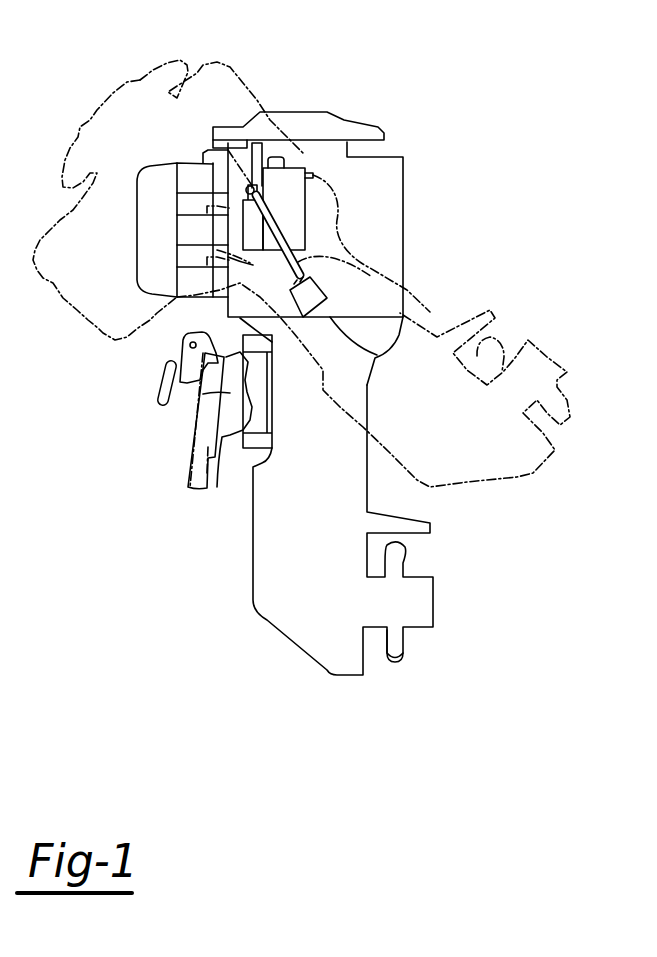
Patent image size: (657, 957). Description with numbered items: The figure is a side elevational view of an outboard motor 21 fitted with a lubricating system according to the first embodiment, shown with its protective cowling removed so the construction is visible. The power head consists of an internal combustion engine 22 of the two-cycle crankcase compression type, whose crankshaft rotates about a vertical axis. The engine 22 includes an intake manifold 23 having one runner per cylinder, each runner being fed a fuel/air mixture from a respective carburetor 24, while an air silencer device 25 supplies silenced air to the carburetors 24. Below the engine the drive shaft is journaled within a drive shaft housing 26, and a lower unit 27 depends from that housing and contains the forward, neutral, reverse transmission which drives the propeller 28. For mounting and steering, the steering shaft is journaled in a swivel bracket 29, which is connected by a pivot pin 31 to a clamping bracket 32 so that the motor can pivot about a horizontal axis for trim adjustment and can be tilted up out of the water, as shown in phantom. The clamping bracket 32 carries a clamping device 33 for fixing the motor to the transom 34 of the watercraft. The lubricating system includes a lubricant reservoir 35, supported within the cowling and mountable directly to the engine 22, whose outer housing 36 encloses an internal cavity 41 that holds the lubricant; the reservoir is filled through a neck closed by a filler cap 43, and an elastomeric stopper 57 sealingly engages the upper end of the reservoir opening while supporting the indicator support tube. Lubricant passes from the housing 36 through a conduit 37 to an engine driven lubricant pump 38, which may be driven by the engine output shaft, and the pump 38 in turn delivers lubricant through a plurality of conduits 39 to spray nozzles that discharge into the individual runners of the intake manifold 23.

The outboard motor 21 is at (426, 133).
The internal combustion engine 22 is at (395, 220).
The intake manifold 23 is at (222, 168).
The carburetor 24 is at (188, 170).
The air silencer device 25 is at (148, 178).
The drive shaft housing 26 is at (360, 398).
The lower unit 27 is at (303, 617).
The propeller 28 is at (400, 650).
The swivel bracket 29 is at (250, 432).
The pivot pin 31 is at (172, 342).
The clamping bracket 32 is at (207, 396).
The clamping device 33 is at (165, 393).
The transom 34 is at (183, 447).
The lubricant reservoir 35 is at (330, 122).
The outer housing 36 is at (300, 232).
The conduit 37 is at (327, 283).
The engine driven lubricant pump 38 is at (378, 357).
The conduits 39 is at (322, 282).
The internal cavity 41 is at (203, 167).
The filler cap 43 is at (299, 158).
The elastomeric stopper 57 is at (256, 178).